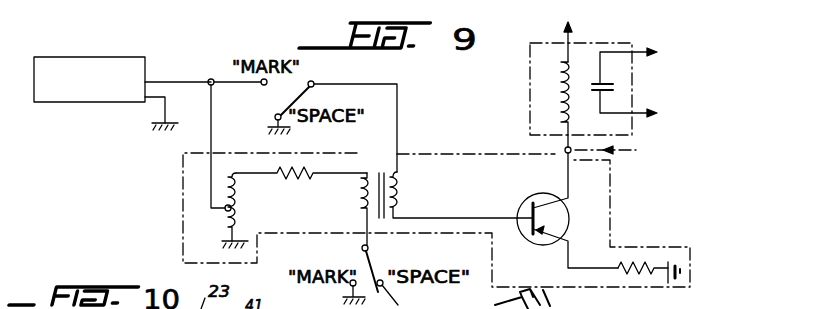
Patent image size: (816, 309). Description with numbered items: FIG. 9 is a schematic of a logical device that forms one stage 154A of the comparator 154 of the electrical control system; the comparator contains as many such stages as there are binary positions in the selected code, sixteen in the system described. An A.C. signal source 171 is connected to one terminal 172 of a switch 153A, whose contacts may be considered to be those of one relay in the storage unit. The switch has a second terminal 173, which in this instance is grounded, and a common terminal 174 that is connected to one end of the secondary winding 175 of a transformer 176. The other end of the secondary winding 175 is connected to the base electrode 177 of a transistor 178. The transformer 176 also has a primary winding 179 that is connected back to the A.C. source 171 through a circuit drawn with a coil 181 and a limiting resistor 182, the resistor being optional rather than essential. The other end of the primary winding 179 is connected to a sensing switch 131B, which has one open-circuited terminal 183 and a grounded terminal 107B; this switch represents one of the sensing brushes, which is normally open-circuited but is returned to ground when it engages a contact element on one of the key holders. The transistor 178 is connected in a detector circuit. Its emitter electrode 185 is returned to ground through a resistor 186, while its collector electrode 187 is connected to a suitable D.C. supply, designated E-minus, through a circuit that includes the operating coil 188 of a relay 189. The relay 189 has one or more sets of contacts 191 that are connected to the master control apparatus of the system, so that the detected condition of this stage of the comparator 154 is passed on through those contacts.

The A.C. signal source 171 is at (125, 57).
The terminal 172 is at (240, 97).
The second terminal 173 is at (272, 116).
The keying switch armature 153A is at (304, 81).
The common terminal 174 is at (315, 89).
The limiting resistor 182 is at (283, 171).
The winding 181 is at (244, 199).
The primary winding 179 is at (361, 196).
The transformer 176 is at (377, 182).
The secondary winding 175 is at (407, 191).
The comparator stage boundary 154A is at (468, 152).
The collector electrode 187 is at (550, 199).
The base electrode 177 is at (528, 214).
The emitter electrode 185 is at (546, 241).
The transistor 178 is at (569, 236).
The resistor 186 is at (647, 272).
The operating coil 188 is at (562, 86).
The relay 189 is at (530, 62).
The sets of contacts 191 is at (610, 77).
The comparator 154 is at (698, 181).
The sensing switch 131B is at (376, 271).
The grounded terminal 107B is at (349, 288).
The open-circuited terminal 183 is at (399, 294).